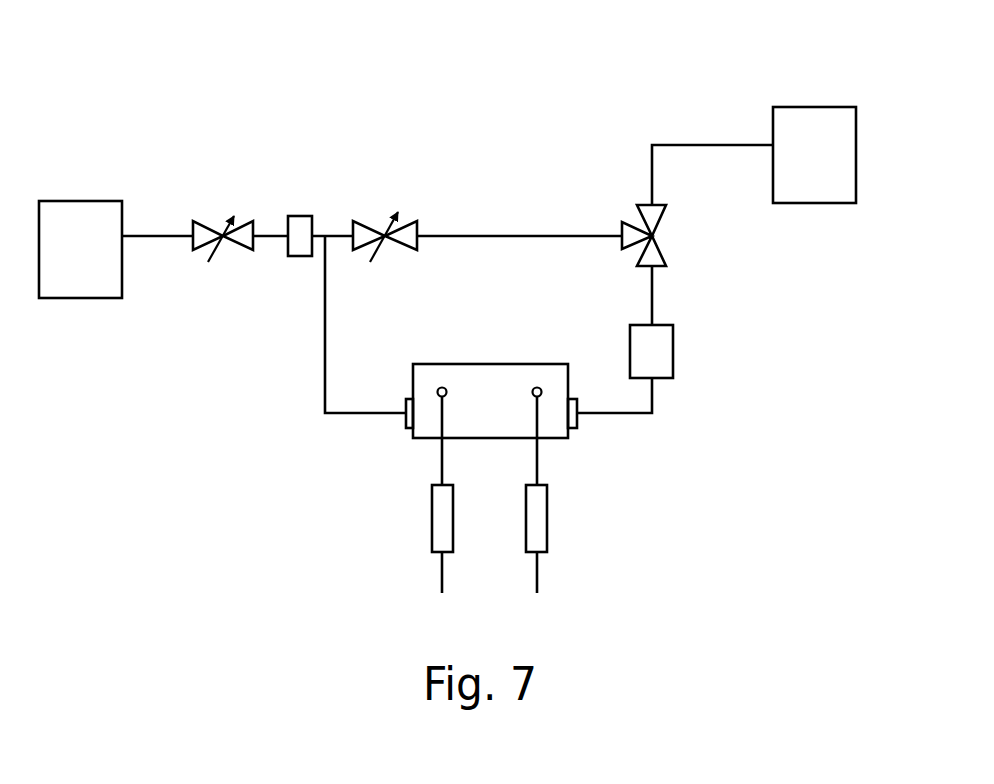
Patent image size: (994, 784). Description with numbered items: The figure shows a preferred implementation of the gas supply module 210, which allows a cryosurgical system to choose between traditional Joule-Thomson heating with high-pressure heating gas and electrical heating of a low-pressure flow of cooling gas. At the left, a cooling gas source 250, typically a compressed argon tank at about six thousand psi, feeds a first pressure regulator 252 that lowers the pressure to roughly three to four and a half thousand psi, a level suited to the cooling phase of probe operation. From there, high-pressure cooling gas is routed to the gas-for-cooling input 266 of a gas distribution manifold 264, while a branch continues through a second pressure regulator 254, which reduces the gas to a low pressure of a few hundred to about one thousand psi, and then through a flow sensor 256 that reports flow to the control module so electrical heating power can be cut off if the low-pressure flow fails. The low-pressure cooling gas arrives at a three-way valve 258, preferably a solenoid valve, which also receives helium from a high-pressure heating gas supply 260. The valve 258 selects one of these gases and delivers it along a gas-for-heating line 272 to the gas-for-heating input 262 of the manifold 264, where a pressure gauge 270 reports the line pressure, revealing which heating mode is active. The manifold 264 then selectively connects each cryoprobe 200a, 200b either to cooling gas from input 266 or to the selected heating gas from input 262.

The gas supply module 210 is at (206, 106).
The cooling gas source 250 is at (80, 290).
The first pressure regulator 252 is at (205, 230).
The second pressure regulator 254 is at (415, 223).
The flow sensor 256 is at (303, 217).
The three-way valve 258 is at (620, 230).
The high-pressure heating gas supply 260 is at (812, 107).
The gas-for-heating input 262 is at (578, 422).
The gas distribution manifold 264 is at (555, 430).
The gas-for-cooling input 266 is at (408, 422).
The pressure gauge 270 is at (672, 357).
The gas-for-heating line 272 is at (653, 293).
The cryoprobe 200a is at (443, 532).
The cryoprobe 200b is at (542, 533).